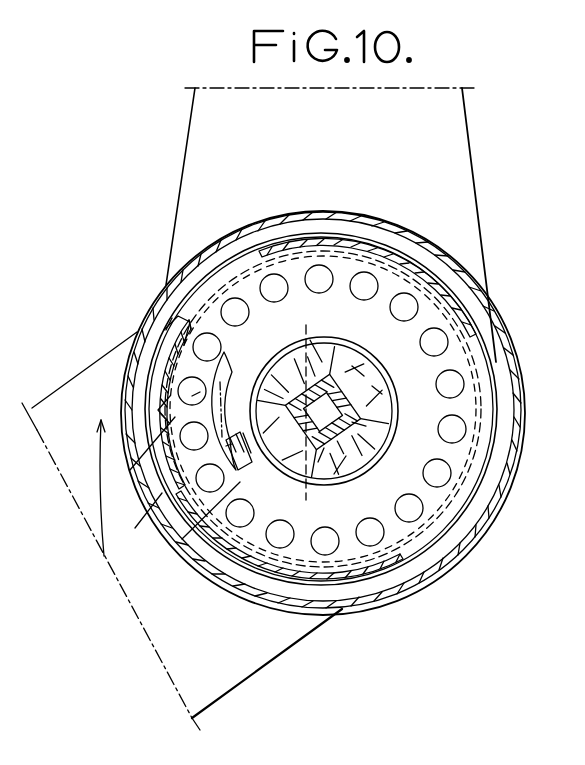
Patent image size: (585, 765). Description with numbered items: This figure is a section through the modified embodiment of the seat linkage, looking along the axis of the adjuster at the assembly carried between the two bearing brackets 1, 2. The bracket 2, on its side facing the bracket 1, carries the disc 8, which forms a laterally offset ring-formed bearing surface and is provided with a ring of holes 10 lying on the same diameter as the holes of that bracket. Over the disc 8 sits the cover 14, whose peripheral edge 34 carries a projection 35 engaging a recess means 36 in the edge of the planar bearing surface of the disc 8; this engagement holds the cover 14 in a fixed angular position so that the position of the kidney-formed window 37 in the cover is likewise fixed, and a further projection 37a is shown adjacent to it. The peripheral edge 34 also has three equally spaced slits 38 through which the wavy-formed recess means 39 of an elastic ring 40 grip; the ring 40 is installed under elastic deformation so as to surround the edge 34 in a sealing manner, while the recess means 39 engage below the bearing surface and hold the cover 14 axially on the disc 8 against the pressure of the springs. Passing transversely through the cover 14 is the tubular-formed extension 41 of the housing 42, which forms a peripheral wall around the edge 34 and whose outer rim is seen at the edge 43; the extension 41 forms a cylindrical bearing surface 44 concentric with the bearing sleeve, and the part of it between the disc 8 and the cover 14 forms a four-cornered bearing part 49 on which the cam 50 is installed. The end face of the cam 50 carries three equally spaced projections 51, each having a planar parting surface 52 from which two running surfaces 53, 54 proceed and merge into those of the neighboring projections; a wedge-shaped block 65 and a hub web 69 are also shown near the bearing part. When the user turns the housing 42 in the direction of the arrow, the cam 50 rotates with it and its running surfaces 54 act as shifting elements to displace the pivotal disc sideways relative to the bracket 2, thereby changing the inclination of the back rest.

The bearing bracket 1 is at (470, 172).
The bearing bracket 2 is at (253, 655).
The disc 8 is at (181, 478).
The holes 10 is at (369, 270).
The cover 14 is at (142, 525).
The peripheral edge 34 is at (160, 354).
The projection 35 is at (152, 410).
The recess means 36 is at (170, 348).
The kidney-formed window 37 is at (204, 398).
The projection 37a is at (232, 446).
The slits 38 is at (224, 258).
The wavy-formed recess means 39 is at (258, 273).
The elastic ring 40 is at (455, 292).
The tubular-formed extension 41 is at (385, 395).
The housing 42 is at (211, 592).
The outer ring edge 43 is at (243, 590).
The cylindrical bearing surface 44 is at (262, 404).
The four-cornered bearing part 49 is at (360, 412).
The cam 50 is at (365, 425).
The projections 51 is at (340, 380).
The planar parting surface 52 is at (355, 382).
The running surface 53 is at (325, 360).
The running surface 54 is at (365, 390).
The wedge block 65 is at (232, 440).
The hub web 69 is at (320, 460).